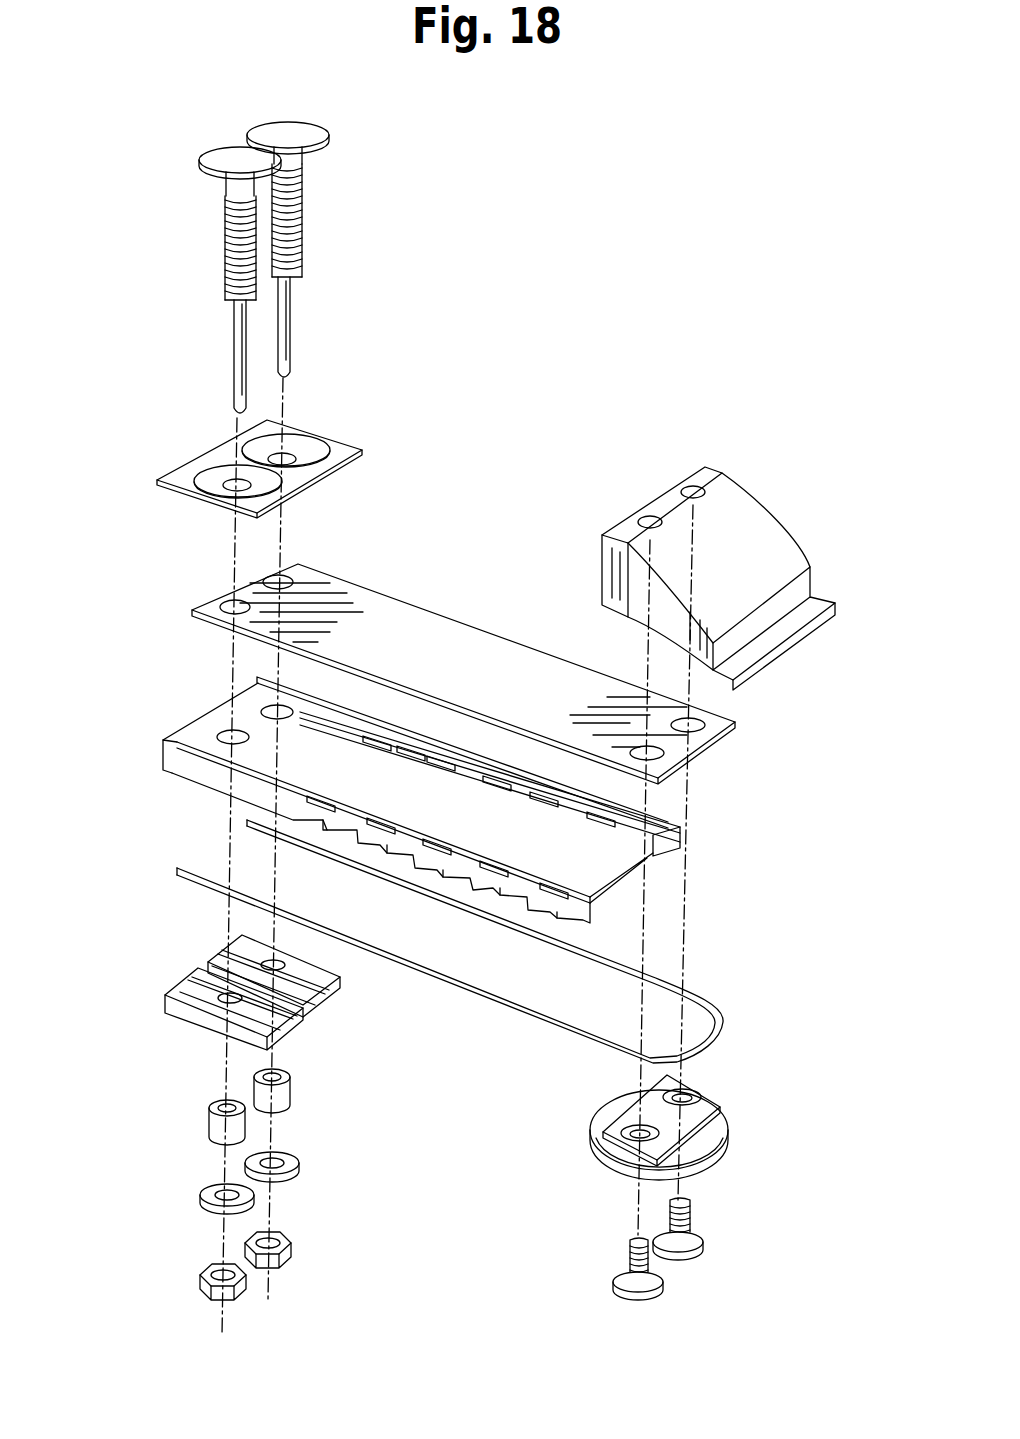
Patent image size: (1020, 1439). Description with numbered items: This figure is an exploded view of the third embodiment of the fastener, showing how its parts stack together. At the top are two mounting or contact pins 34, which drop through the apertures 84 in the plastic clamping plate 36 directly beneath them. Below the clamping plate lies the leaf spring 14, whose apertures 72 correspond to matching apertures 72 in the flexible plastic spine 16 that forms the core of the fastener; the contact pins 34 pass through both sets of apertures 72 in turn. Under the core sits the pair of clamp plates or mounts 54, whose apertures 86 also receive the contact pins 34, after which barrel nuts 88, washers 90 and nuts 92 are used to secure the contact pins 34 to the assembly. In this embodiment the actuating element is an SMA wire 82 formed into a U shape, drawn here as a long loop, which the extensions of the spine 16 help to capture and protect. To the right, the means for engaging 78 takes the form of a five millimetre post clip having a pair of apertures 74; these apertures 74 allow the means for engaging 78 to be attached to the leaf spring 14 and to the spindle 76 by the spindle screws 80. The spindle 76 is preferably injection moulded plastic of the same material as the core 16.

The leaf spring 14 is at (218, 597).
The plastic spine 16 is at (252, 693).
The contact pins 34 is at (270, 133).
The plastic clamping plate 36 is at (340, 452).
The clamp plates 54 is at (217, 945).
The apertures 72 is at (243, 598).
The apertures 74 is at (692, 487).
The spindle 76 is at (713, 1123).
The means for engaging 78 is at (753, 513).
The spindle screws 80 is at (660, 1275).
The SMA wire 82 is at (703, 995).
The apertures 84 is at (273, 456).
The apertures 86 is at (290, 1020).
The barrel nuts 88 is at (247, 1066).
The washers 90 is at (244, 1163).
The nuts 92 is at (246, 1240).